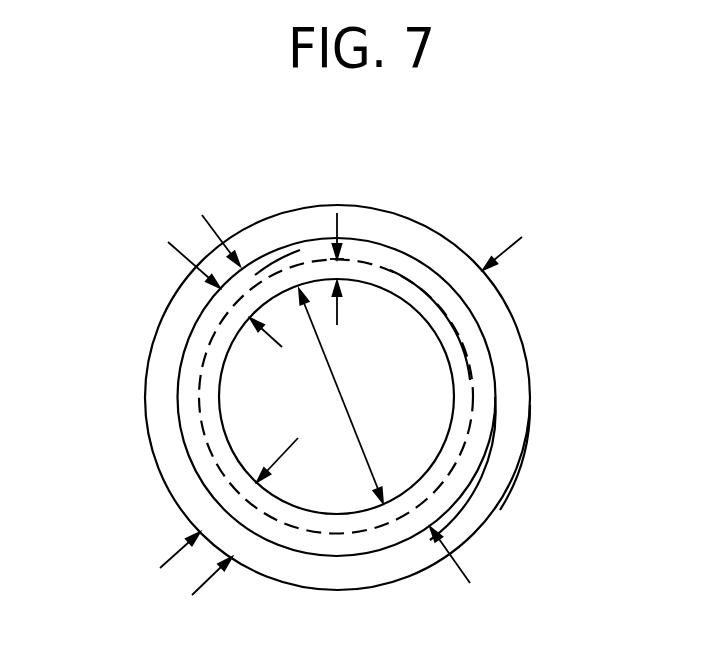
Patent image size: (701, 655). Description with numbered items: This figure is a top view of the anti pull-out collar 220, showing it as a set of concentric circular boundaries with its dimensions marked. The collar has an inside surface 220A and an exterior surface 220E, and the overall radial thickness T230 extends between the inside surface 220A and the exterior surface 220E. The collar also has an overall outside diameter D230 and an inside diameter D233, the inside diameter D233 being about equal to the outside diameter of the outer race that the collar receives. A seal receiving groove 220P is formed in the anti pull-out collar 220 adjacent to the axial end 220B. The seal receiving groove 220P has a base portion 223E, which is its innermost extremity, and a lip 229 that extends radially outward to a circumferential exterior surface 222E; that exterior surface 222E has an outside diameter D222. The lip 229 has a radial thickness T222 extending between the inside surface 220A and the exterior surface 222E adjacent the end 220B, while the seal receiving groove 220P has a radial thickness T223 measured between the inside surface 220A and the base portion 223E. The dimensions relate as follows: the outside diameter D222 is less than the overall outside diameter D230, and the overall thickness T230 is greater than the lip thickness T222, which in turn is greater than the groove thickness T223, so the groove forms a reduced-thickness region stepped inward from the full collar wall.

The anti pull-out collar 220 is at (142, 162).
The exterior surface 220E is at (530, 405).
The inside surface 220A is at (428, 500).
The seal receiving groove 220P is at (488, 366).
The third axial end 220B is at (297, 269).
The circumferential exterior surface 222E is at (478, 323).
The base portion 223E is at (394, 267).
The lip 229 is at (260, 272).
The outside diameter of the circumferential exterior surface D222 is at (202, 216).
The radial thickness of the lip T222 is at (185, 255).
The radial thickness of the seal receiving groove T223 is at (338, 305).
The inside diameter D233 is at (343, 398).
The overall radial thickness T230 is at (182, 548).
The overall outside diameter D230 is at (205, 582).